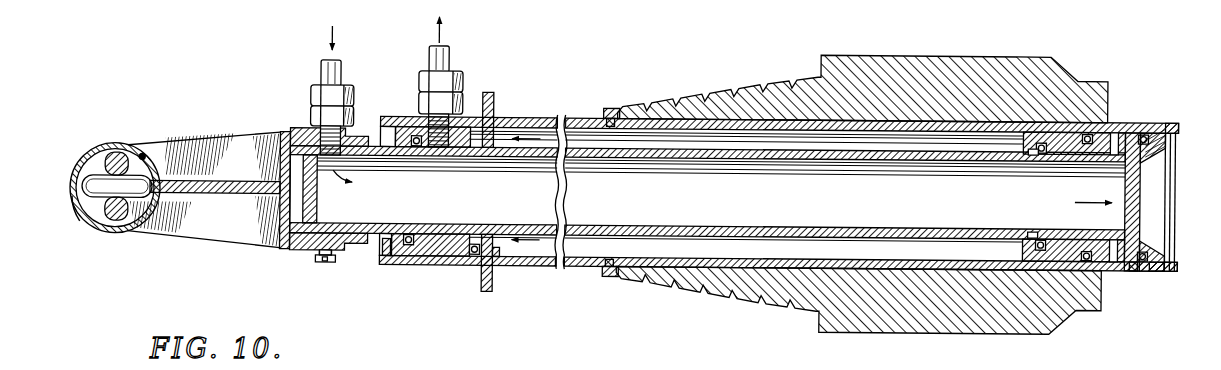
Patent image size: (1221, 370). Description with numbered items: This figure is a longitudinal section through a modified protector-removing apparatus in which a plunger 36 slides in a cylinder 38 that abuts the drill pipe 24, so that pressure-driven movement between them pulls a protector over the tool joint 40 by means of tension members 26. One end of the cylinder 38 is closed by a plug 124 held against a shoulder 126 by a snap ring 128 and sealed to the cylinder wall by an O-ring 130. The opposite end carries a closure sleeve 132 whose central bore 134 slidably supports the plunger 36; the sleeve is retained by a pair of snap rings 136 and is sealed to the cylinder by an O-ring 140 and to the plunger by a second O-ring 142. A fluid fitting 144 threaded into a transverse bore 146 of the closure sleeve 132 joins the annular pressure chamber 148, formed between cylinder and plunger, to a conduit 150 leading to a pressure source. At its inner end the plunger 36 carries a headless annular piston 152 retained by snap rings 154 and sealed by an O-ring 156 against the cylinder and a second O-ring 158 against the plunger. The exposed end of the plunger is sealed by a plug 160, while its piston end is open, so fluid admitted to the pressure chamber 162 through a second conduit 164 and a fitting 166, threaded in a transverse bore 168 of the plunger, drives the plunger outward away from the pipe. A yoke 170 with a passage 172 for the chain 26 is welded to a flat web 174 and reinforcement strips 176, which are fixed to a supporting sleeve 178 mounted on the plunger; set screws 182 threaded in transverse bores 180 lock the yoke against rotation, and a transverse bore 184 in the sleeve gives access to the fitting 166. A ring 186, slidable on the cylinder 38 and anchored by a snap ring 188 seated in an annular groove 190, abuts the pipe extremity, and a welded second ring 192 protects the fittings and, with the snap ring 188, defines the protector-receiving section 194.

The drill pipe 24 is at (1105, 78).
The tension members 26 is at (100, 178).
The plunger 36 is at (608, 230).
The cylinder 38 is at (580, 118).
The tool joint 40 is at (900, 58).
The plug 124 is at (1165, 126).
The shoulder 126 is at (1153, 267).
The snap ring 128 is at (1172, 266).
The O-ring 130 is at (1136, 266).
The closure sleeve 132 is at (440, 260).
The central bore 134 is at (398, 232).
The snap rings 136 is at (389, 262).
The O-ring 140 is at (482, 268).
The second O-ring 142 is at (402, 126).
The fluid fitting 144 is at (456, 82).
The transverse bore 146 is at (458, 106).
The annular pressure chamber 148 is at (732, 145).
The conduit 150 is at (430, 60).
The headless annular piston 152 is at (1116, 132).
The snap rings 154 is at (1142, 130).
The O-ring 156 is at (1092, 130).
The second O-ring 158 is at (1042, 152).
The plug 160 is at (318, 196).
The pressure chamber 162 is at (900, 198).
The second conduit 164 is at (320, 70).
The fitting 166 is at (311, 94).
The transverse bore 168 is at (350, 135).
The yoke 170 is at (92, 221).
The passage 172 is at (145, 157).
The flat web 174 is at (216, 196).
The reinforcement strips 176 is at (205, 140).
The supporting sleeve 178 is at (292, 250).
The transverse bores 180 is at (345, 252).
The set screws 182 is at (325, 265).
The transverse bore 184 is at (310, 124).
The ring 186 is at (618, 276).
The snap ring 188 is at (610, 110).
The annular groove 190 is at (612, 258).
The second ring 192 is at (494, 108).
The protector-receiving section 194 is at (544, 268).